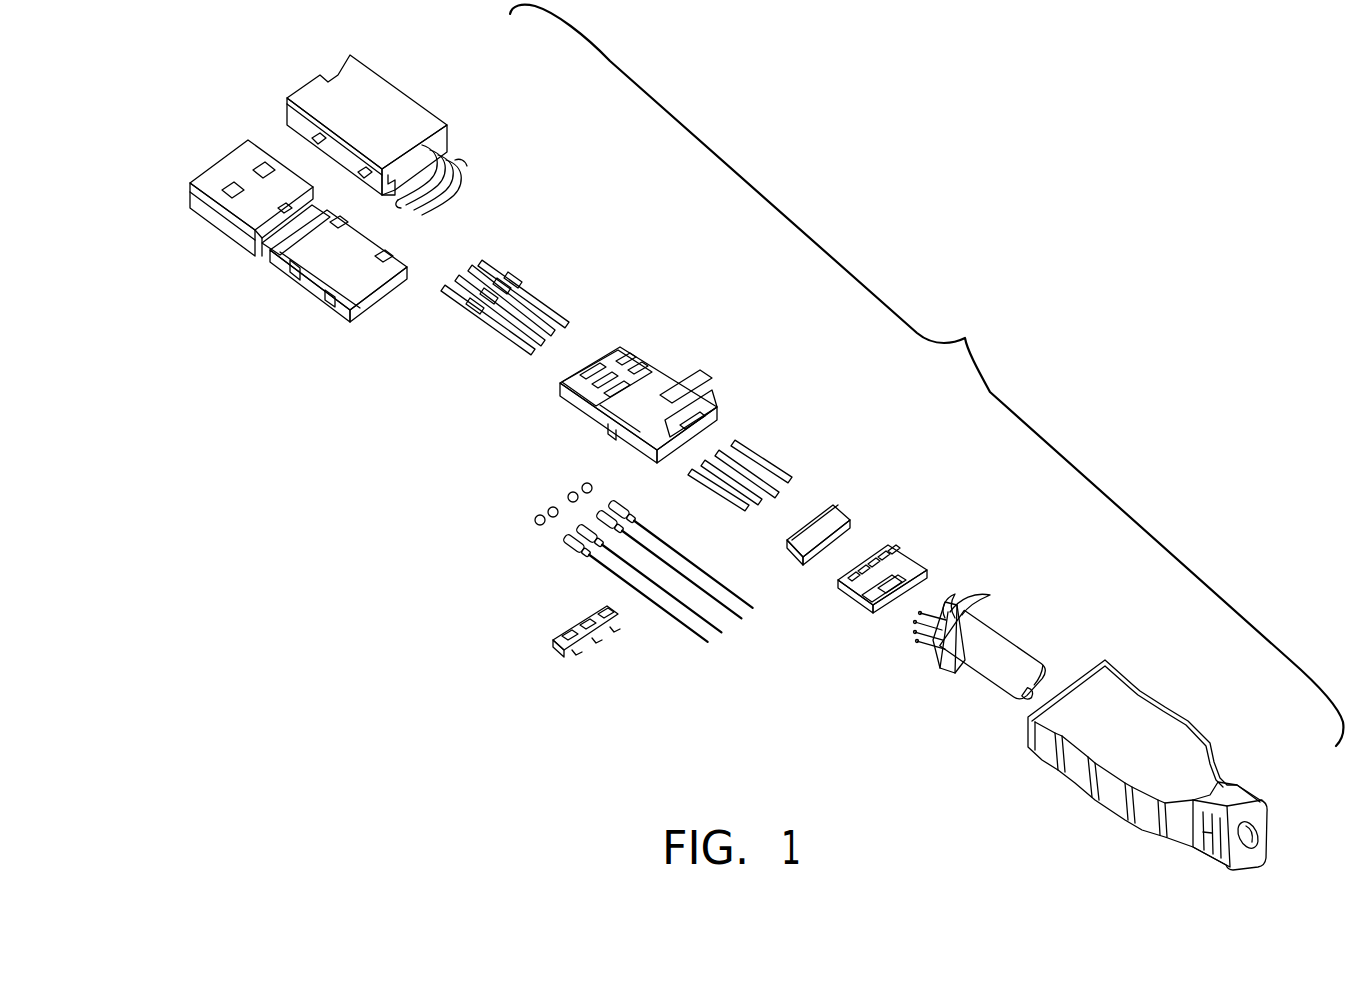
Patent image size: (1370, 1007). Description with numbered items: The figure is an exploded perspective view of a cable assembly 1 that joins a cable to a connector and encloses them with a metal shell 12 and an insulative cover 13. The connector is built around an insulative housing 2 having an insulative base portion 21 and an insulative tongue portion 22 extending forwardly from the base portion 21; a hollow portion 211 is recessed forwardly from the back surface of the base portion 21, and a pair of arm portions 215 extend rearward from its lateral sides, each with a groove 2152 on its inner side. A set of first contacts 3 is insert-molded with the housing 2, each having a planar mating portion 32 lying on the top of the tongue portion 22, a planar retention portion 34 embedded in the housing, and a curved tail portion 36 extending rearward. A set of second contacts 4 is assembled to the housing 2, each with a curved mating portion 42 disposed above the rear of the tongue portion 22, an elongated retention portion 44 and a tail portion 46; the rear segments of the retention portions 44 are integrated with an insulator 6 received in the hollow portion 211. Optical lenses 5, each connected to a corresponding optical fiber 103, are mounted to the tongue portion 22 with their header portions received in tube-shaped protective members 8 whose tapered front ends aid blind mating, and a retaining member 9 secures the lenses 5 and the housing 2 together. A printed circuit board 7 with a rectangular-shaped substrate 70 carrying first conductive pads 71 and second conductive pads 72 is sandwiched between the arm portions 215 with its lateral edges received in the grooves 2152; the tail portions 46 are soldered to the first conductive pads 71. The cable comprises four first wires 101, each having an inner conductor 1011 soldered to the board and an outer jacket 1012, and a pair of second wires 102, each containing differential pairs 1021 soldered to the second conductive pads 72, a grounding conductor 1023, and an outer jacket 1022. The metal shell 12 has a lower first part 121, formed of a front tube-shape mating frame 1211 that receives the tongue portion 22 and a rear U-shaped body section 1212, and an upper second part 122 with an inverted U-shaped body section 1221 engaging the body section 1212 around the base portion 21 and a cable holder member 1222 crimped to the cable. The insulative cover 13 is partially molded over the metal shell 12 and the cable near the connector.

The cable assembly 1 is at (926, 375).
The metal shell 12 is at (138, 220).
The lower first part 121 is at (218, 338).
The front tube-shape mating frame 1211 is at (240, 230).
The rear U-shaped body section 1212 is at (300, 283).
The upper second part 122 is at (515, 62).
The inverted U-shaped body section 1221 is at (407, 108).
The cable holder member 1222 is at (443, 143).
The first contacts 3 is at (488, 335).
The planar mating portion 32 is at (449, 293).
The planar retention portion 34 is at (492, 330).
The curved tail portion 36 is at (528, 352).
The insulative housing 2 is at (694, 370).
The insulative base portion 21 is at (662, 390).
The insulative tongue portion 22 is at (628, 357).
The hollow portion 211 is at (690, 407).
The arm portions 215 is at (712, 411).
The groove 2152 is at (716, 424).
The second contacts 4 is at (734, 486).
The curved mating portion 42 is at (692, 472).
The elongated retention portion 44 is at (713, 485).
The tail portion 46 is at (743, 504).
The tube-shaped protective members 8 is at (514, 518).
The optical lenses 5 is at (637, 602).
The optical fiber 103 is at (668, 615).
The retaining member 9 is at (530, 635).
The insulator 6 is at (860, 496).
The printed circuit board 7 is at (892, 575).
The rectangular-shaped substrate 70 is at (880, 545).
The first conductive pads 71 is at (851, 584).
The second conductive pads 72 is at (871, 590).
The first wires 101 is at (886, 720).
The inner conductor 1011 is at (925, 637).
The outer jacket 1012 is at (948, 658).
The second wires 102 is at (1025, 542).
The differential pairs 1021 is at (960, 612).
The outer jacket 1022 is at (965, 613).
The grounding conductor 1023 is at (942, 598).
The insulative cover 13 is at (1197, 688).